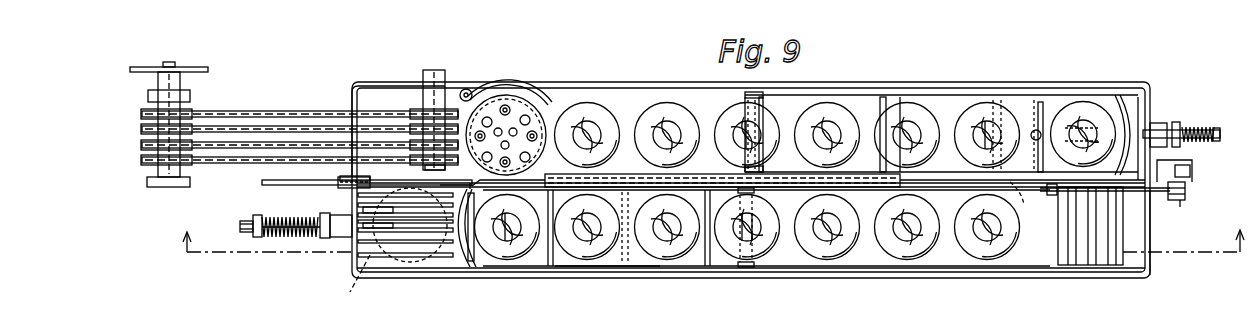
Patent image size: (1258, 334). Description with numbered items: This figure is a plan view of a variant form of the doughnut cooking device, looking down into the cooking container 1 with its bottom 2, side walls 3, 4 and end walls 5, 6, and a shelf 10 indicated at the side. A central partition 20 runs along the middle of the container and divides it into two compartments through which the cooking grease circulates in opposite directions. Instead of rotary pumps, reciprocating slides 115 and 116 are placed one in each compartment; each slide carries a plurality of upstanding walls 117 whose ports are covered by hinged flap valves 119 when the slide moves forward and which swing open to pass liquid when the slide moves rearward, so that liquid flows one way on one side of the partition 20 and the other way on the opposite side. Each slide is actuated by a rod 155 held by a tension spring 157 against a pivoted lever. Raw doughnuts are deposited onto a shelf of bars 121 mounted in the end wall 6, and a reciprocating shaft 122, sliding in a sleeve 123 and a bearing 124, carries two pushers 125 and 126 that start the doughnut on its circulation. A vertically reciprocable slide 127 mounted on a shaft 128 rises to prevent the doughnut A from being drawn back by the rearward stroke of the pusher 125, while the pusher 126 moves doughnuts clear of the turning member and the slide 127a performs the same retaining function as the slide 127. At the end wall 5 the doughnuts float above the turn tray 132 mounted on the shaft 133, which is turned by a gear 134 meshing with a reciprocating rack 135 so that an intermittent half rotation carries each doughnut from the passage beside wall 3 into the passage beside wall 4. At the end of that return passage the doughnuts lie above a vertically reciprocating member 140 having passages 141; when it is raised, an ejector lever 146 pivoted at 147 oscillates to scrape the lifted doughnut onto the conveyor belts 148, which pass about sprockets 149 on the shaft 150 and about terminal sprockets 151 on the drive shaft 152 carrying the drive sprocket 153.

The cooking container 1 is at (930, 80).
The bottom 2 is at (862, 258).
The side wall 3 is at (912, 278).
The side wall 4 is at (989, 83).
The end wall 5 is at (1150, 232).
The end wall 6 is at (352, 92).
The shelf 10 is at (711, 266).
The central partition 20 is at (1026, 201).
The doughnut A is at (605, 108).
The reciprocating slide 115 is at (556, 268).
The reciprocating slide 116 is at (948, 100).
The upstanding walls 117 is at (762, 100).
The hinged flap valves 119 is at (747, 135).
The bars 121 is at (408, 248).
The reciprocating shaft 122 is at (306, 186).
The sleeve 123 is at (636, 176).
The bearing 124 is at (345, 188).
The pusher 125 is at (461, 264).
The pusher 126 is at (1128, 95).
The vertically reciprocable slide 127 is at (480, 266).
The slide 127a is at (1044, 108).
The shaft 128 is at (484, 180).
The turn tray 132 is at (1090, 266).
The shaft 133 is at (1165, 196).
The gear 134 is at (1186, 191).
The reciprocating rack 135 is at (1194, 172).
The vertically reciprocating member 140 is at (520, 118).
The passages 141 is at (536, 132).
The ejector lever 146 is at (505, 80).
The pivot 147 is at (467, 88).
The conveyor belts 148 is at (240, 110).
The sprockets 149 is at (416, 126).
The shaft 150 is at (425, 167).
The terminal sprockets 151 is at (142, 144).
The drive shaft 152 is at (166, 63).
The drive sprocket 153 is at (202, 67).
The rod 155 is at (1225, 130).
The tension spring 157 is at (1195, 125).